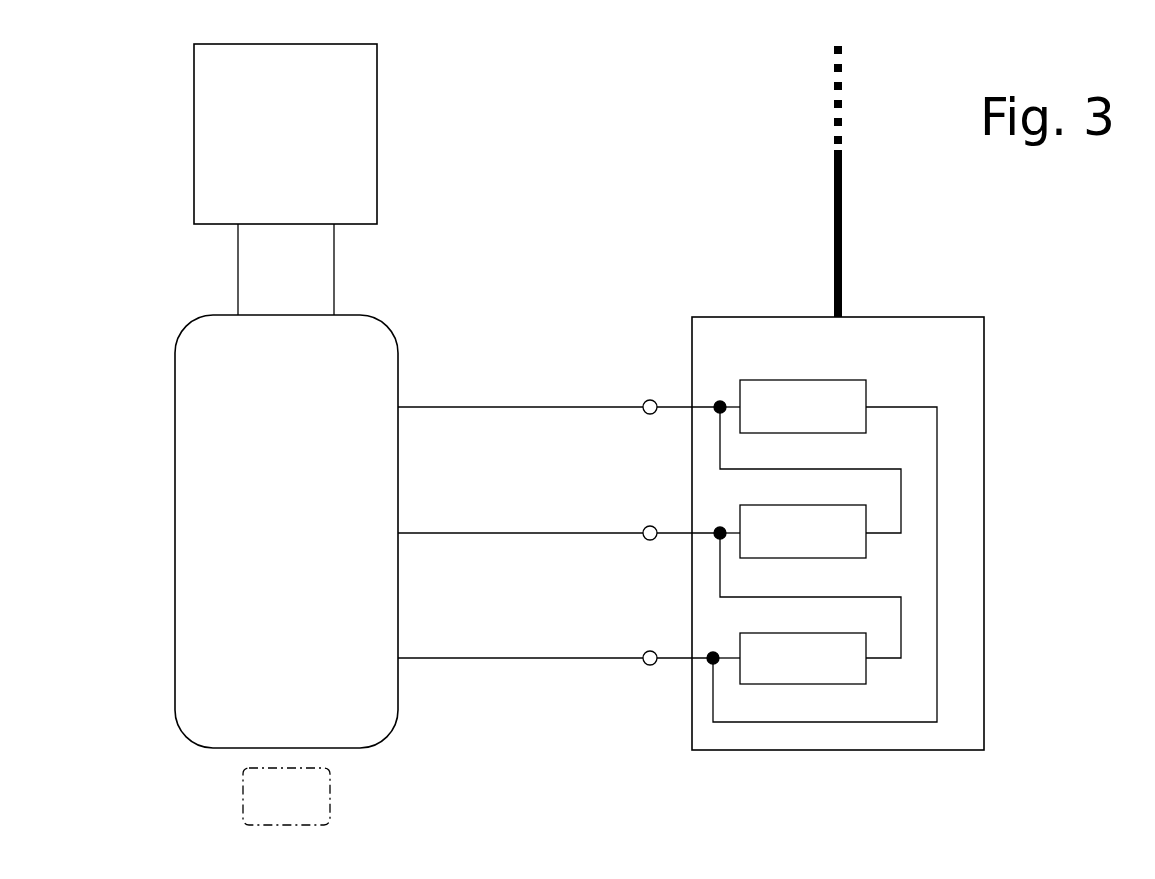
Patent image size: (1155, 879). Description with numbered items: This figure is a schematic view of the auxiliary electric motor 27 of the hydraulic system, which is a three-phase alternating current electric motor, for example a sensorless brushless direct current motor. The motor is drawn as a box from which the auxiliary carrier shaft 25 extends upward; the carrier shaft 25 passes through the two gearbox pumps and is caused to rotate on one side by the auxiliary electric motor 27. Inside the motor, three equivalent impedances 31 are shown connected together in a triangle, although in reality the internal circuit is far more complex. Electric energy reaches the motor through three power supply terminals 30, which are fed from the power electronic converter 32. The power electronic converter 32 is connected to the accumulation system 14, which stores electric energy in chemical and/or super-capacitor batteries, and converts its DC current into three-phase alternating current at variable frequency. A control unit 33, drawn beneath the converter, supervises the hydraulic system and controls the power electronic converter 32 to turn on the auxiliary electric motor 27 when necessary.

The accumulation system 14 is at (285, 134).
The auxiliary carrier shaft 25 is at (843, 218).
The auxiliary electric motor 27 is at (707, 238).
The power supply terminals 30 is at (650, 415).
The equivalent impedances 31 is at (803, 532).
The power electronic converter 32 is at (286, 486).
The control unit 33 is at (286, 796).